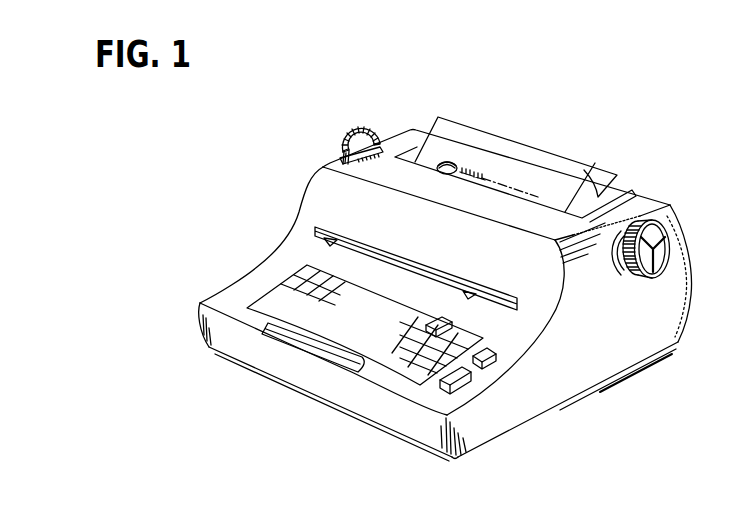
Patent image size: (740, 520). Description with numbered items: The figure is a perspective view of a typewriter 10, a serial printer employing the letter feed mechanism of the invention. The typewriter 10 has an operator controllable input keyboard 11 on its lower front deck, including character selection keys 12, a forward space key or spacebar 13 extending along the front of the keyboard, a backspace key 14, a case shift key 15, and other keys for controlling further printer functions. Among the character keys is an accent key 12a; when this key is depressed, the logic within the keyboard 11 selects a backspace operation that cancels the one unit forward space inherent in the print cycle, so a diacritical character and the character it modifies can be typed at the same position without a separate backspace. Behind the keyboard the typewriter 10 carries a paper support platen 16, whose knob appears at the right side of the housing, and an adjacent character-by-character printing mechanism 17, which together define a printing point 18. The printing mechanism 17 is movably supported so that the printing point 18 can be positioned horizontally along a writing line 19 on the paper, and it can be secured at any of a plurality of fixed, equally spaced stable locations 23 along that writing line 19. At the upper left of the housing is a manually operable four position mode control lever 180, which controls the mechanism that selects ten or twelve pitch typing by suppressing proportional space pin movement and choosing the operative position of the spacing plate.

The typewriter 10 is at (243, 204).
The input keyboard 11 is at (295, 283).
The character selection keys 12 is at (400, 316).
The accent key 12a is at (446, 304).
The spacebar 13 is at (327, 350).
The backspace key 14 is at (488, 353).
The case shift key 15 is at (470, 378).
The paper support platen 16 is at (598, 192).
The printing mechanism 17 is at (462, 152).
The printing point 18 is at (463, 172).
The writing line 19 is at (543, 157).
The stable locations 23 is at (479, 178).
The mode control lever 180 is at (343, 148).